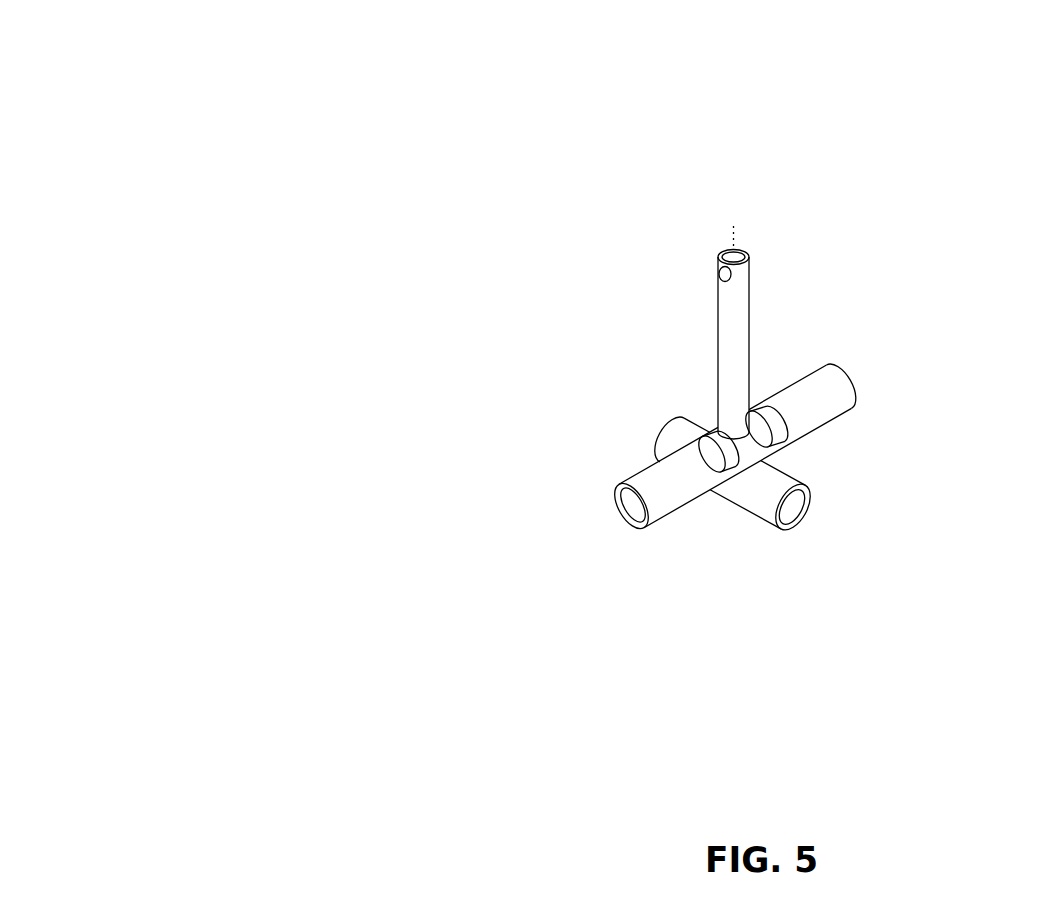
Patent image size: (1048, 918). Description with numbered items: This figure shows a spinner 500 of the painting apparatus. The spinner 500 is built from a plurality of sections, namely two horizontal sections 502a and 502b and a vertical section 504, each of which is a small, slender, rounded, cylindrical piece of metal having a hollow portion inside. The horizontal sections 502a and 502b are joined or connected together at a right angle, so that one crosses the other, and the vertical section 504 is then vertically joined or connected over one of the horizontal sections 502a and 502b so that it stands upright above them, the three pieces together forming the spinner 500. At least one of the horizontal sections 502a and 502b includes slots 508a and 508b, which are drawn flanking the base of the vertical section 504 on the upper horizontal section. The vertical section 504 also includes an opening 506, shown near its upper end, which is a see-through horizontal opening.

The spinner 500 is at (280, 115).
The horizontal section 502a is at (853, 382).
The horizontal section 502b is at (800, 488).
The vertical section 504 is at (748, 353).
The opening 506 is at (724, 277).
The slot 508a is at (720, 473).
The slot 508b is at (768, 447).